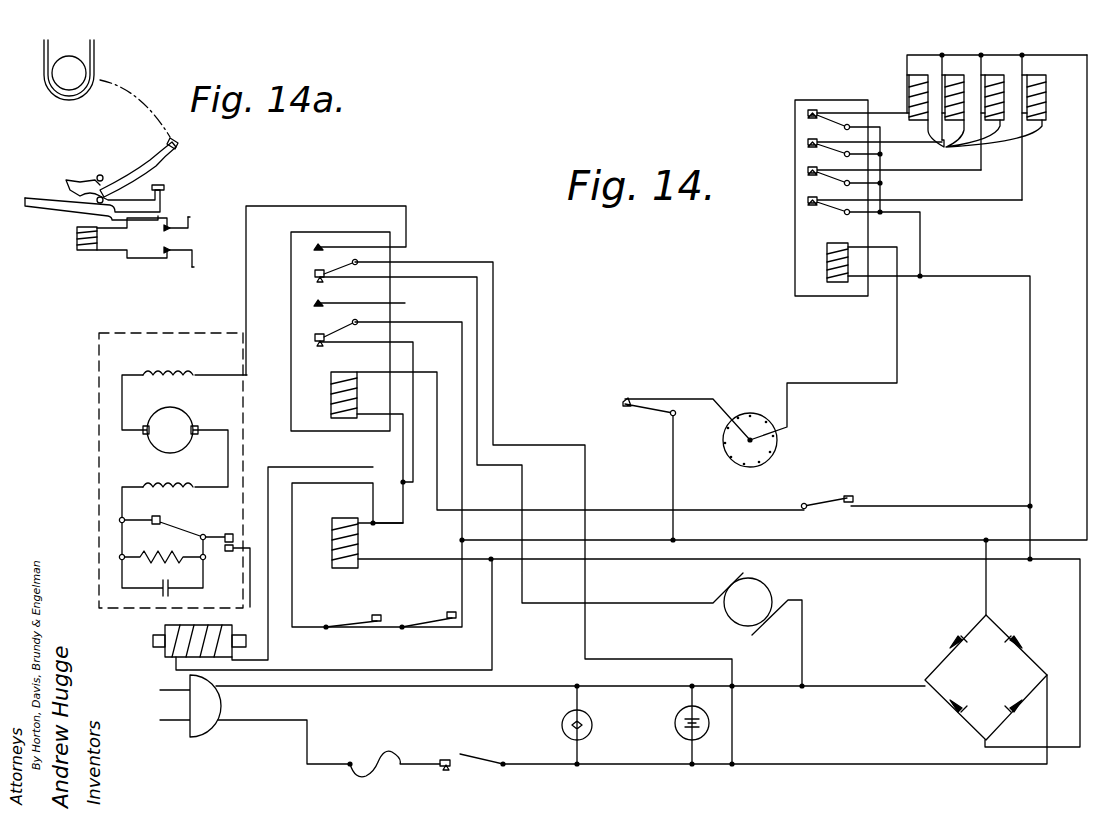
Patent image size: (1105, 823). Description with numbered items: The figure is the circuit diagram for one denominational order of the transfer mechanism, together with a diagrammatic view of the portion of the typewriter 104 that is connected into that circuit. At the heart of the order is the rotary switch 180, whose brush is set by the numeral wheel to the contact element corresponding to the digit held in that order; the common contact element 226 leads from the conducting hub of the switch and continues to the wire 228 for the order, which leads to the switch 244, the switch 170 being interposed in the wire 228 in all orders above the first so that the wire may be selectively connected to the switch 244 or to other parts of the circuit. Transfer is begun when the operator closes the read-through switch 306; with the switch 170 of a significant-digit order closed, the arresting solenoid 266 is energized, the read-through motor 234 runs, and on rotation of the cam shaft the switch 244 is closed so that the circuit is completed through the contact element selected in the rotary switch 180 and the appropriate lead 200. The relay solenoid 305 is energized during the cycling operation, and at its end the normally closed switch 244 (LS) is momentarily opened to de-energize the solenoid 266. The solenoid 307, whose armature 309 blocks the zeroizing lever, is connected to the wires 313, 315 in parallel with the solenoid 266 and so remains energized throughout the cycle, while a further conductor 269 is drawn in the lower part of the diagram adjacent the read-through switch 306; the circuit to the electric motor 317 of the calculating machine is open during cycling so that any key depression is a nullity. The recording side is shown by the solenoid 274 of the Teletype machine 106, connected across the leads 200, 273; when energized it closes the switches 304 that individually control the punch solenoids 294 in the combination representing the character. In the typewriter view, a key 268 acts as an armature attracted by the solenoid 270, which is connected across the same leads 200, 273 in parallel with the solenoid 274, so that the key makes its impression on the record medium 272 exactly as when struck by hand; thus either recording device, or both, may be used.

In FIG. 14A, the typewriter 104 is at (128, 163).
In FIG. 14, the Teletype machine 106 is at (972, 118).
In FIG. 14, the switch 170 is at (415, 632).
In FIG. 14, the rotary switch 180 is at (770, 466).
In FIG. 14, the leads 200 is at (803, 410).
In FIG. 14A, the leads 200 is at (202, 205).
In FIG. 14, the common contact element 226 is at (727, 448).
In FIG. 14, the wire 228 is at (685, 400).
In FIG. 14, the read-through motor 234 is at (726, 620).
In FIG. 14, the switch 244 is at (655, 406).
In FIG. 14, the arresting solenoid 266 is at (345, 570).
In FIG. 14A, the key 268 is at (63, 200).
In FIG. 14, the conductor 269 is at (386, 674).
In FIG. 14A, the solenoid 270 is at (85, 251).
In FIG. 14A, the record medium 272 is at (97, 62).
In FIG. 14, the lead 273 is at (945, 276).
In FIG. 14A, the lead 273 is at (186, 277).
In FIG. 14, the solenoid 274 is at (838, 283).
In FIG. 14, the punch solenoids 294 is at (985, 144).
In FIG. 14, the switches 304 is at (908, 204).
In FIG. 14, the relay solenoid 305 is at (346, 420).
In FIG. 14, the read-through switch 306 is at (355, 628).
In FIG. 14, the solenoid 307 is at (165, 631).
In FIG. 14, the armature 309 is at (244, 636).
In FIG. 14, the wire 313 is at (692, 619).
In FIG. 14, the wire 315 is at (393, 562).
In FIG. 14, the electric motor 317 is at (188, 418).